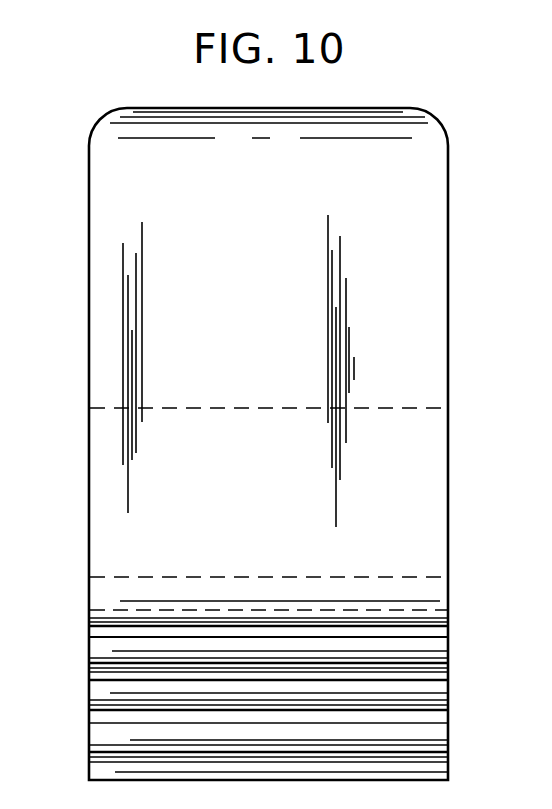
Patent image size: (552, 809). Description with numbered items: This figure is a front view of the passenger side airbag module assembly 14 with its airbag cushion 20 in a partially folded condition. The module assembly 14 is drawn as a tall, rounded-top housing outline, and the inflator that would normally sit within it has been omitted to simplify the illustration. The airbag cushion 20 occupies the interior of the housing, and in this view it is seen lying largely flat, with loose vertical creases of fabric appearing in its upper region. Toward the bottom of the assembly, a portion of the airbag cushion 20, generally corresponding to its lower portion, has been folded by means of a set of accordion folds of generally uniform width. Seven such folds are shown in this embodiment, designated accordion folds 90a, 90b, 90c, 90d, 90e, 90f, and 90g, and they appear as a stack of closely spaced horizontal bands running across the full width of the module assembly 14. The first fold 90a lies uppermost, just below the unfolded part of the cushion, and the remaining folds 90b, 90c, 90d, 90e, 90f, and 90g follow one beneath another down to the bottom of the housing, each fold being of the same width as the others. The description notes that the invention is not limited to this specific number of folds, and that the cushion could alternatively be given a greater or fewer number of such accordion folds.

The airbag module assembly 14 is at (78, 528).
The airbag cushion 20 is at (285, 240).
The accordion fold 90a is at (450, 630).
The accordion fold 90b is at (105, 652).
The accordion fold 90c is at (450, 677).
The accordion fold 90d is at (105, 693).
The accordion fold 90e is at (450, 718).
The accordion fold 90f is at (102, 738).
The accordion fold 90g is at (450, 761).